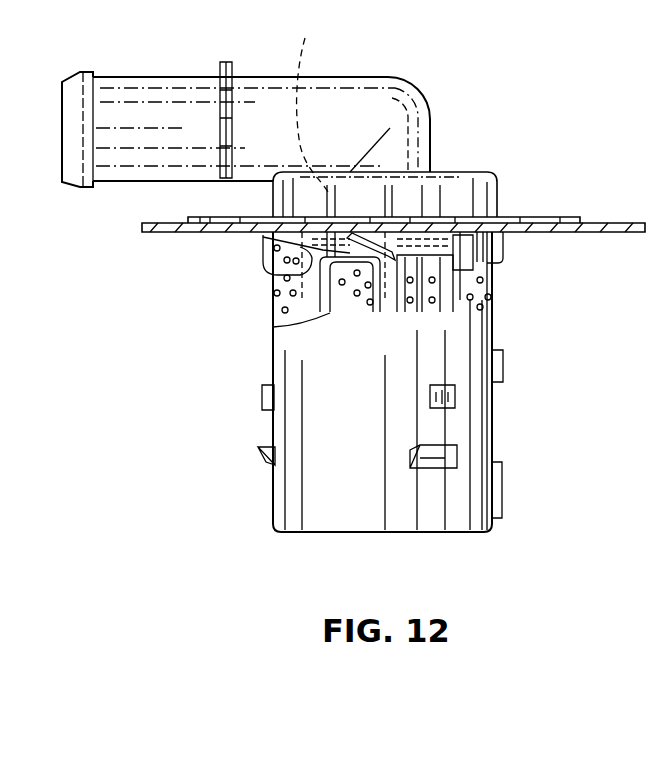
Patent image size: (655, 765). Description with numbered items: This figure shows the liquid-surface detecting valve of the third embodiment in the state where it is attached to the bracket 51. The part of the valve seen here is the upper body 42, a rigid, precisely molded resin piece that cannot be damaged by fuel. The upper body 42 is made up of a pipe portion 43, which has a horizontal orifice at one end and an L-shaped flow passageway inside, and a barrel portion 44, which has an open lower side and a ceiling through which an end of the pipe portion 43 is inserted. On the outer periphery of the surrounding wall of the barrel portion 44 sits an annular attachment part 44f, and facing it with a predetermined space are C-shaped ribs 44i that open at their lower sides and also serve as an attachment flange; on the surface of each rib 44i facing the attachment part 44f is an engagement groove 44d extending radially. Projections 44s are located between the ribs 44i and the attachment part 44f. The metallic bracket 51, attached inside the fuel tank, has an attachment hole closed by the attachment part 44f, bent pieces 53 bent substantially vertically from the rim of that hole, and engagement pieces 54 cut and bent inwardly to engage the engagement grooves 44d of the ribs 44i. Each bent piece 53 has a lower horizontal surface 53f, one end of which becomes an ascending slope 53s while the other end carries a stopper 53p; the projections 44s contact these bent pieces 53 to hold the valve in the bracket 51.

The upper body 42 is at (420, 73).
The pipe portion 43 is at (163, 97).
The barrel portion 44 is at (368, 505).
The projections 44s is at (313, 100).
The attachment part 44f is at (551, 217).
The engagement groove 44d is at (336, 309).
The ribs 44i is at (425, 265).
The bracket 51 is at (626, 223).
The bent pieces 53 is at (524, 249).
The ascending slope 53s is at (292, 270).
The stopper 53p is at (505, 245).
The lower horizontal surface 53f is at (395, 254).
The engagement pieces 54 is at (385, 232).